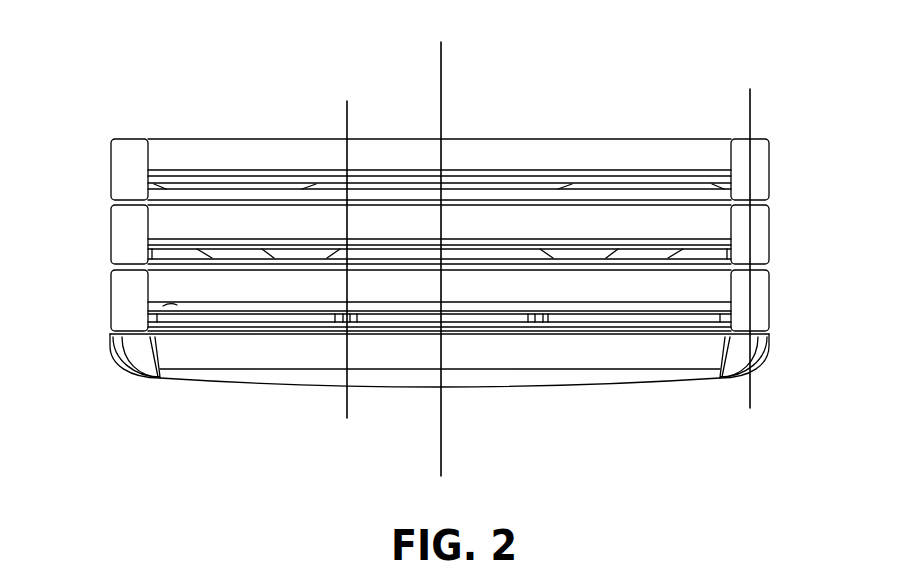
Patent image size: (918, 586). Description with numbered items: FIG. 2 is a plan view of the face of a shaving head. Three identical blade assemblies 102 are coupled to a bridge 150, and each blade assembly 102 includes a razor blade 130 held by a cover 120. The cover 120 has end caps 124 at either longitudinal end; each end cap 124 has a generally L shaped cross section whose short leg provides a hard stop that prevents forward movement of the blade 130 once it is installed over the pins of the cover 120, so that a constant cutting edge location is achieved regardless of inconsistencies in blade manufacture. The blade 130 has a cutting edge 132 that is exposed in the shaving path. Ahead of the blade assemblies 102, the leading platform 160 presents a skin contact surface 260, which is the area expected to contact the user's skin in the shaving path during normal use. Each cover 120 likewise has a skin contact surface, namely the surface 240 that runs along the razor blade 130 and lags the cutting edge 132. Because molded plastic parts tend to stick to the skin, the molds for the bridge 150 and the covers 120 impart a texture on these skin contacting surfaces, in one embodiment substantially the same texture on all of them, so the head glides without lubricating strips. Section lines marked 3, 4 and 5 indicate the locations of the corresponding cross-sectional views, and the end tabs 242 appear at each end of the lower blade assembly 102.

The section line 3- 3 is at (768, 408).
The section line 4- 4 is at (363, 413).
The section line 5- 5 is at (458, 471).
The blade assembly 102 is at (770, 172).
The cover 120 is at (480, 288).
The end cap 124 is at (773, 333).
The blade 130 is at (123, 352).
The cutting edge 132 is at (233, 308).
The bridge 150 is at (225, 372).
The leading platform 160 is at (533, 355).
The surface 240 is at (698, 285).
The tray end tabs 242 is at (122, 303).
The skin contact surface 260 is at (610, 355).